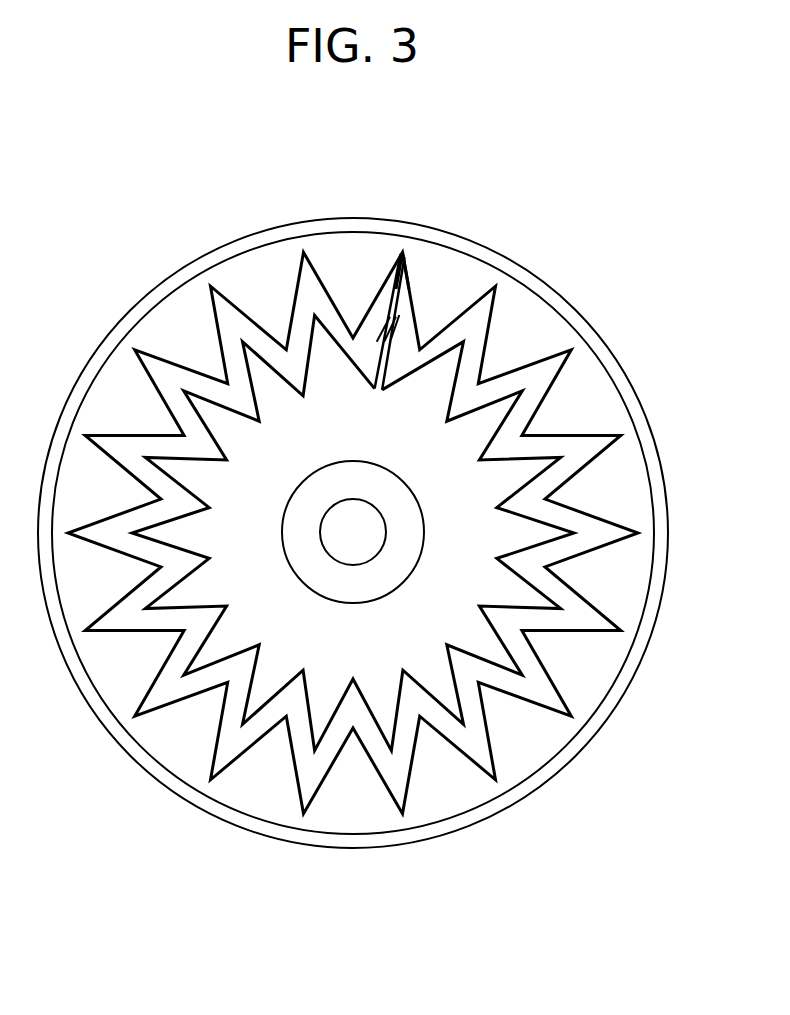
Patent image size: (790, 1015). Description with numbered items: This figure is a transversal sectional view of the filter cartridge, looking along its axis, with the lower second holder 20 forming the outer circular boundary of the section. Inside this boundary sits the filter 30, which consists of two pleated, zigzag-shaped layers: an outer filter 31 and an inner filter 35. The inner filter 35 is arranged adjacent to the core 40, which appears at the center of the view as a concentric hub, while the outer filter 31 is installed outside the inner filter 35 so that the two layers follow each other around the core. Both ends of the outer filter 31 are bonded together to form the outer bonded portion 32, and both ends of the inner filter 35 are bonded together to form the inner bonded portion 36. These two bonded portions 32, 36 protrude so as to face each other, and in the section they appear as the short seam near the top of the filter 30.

The second holder 20 is at (568, 752).
The filter 30 is at (353, 570).
The outer filter 31 is at (363, 743).
The outer bonded portion 32 is at (400, 295).
The inner filter 35 is at (377, 725).
The inner bonded portion 36 is at (388, 352).
The core 40 is at (300, 563).